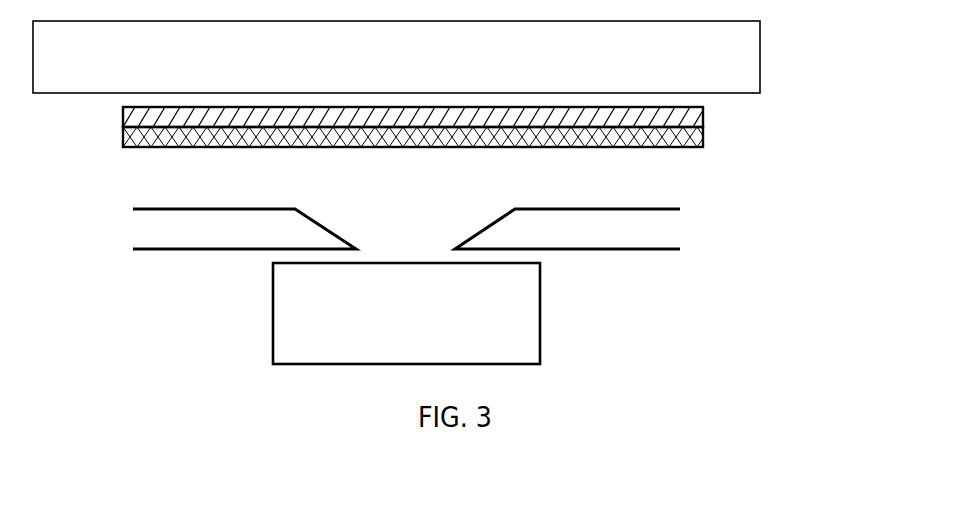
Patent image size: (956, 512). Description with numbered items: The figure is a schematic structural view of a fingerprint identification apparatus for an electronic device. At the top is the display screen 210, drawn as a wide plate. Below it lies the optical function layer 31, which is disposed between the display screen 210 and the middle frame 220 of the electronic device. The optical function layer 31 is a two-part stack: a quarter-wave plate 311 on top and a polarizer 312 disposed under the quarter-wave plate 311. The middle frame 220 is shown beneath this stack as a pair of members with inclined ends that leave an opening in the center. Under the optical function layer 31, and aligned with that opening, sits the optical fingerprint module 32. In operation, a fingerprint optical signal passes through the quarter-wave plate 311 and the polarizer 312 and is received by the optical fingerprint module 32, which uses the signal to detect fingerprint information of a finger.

The display screen 210 is at (741, 61).
The optical function layer 31 is at (440, 173).
The quarter-wave plate 311 is at (703, 117).
The polarizer 312 is at (703, 137).
The middle frame 220 is at (143, 222).
The optical fingerprint module 32 is at (406, 313).